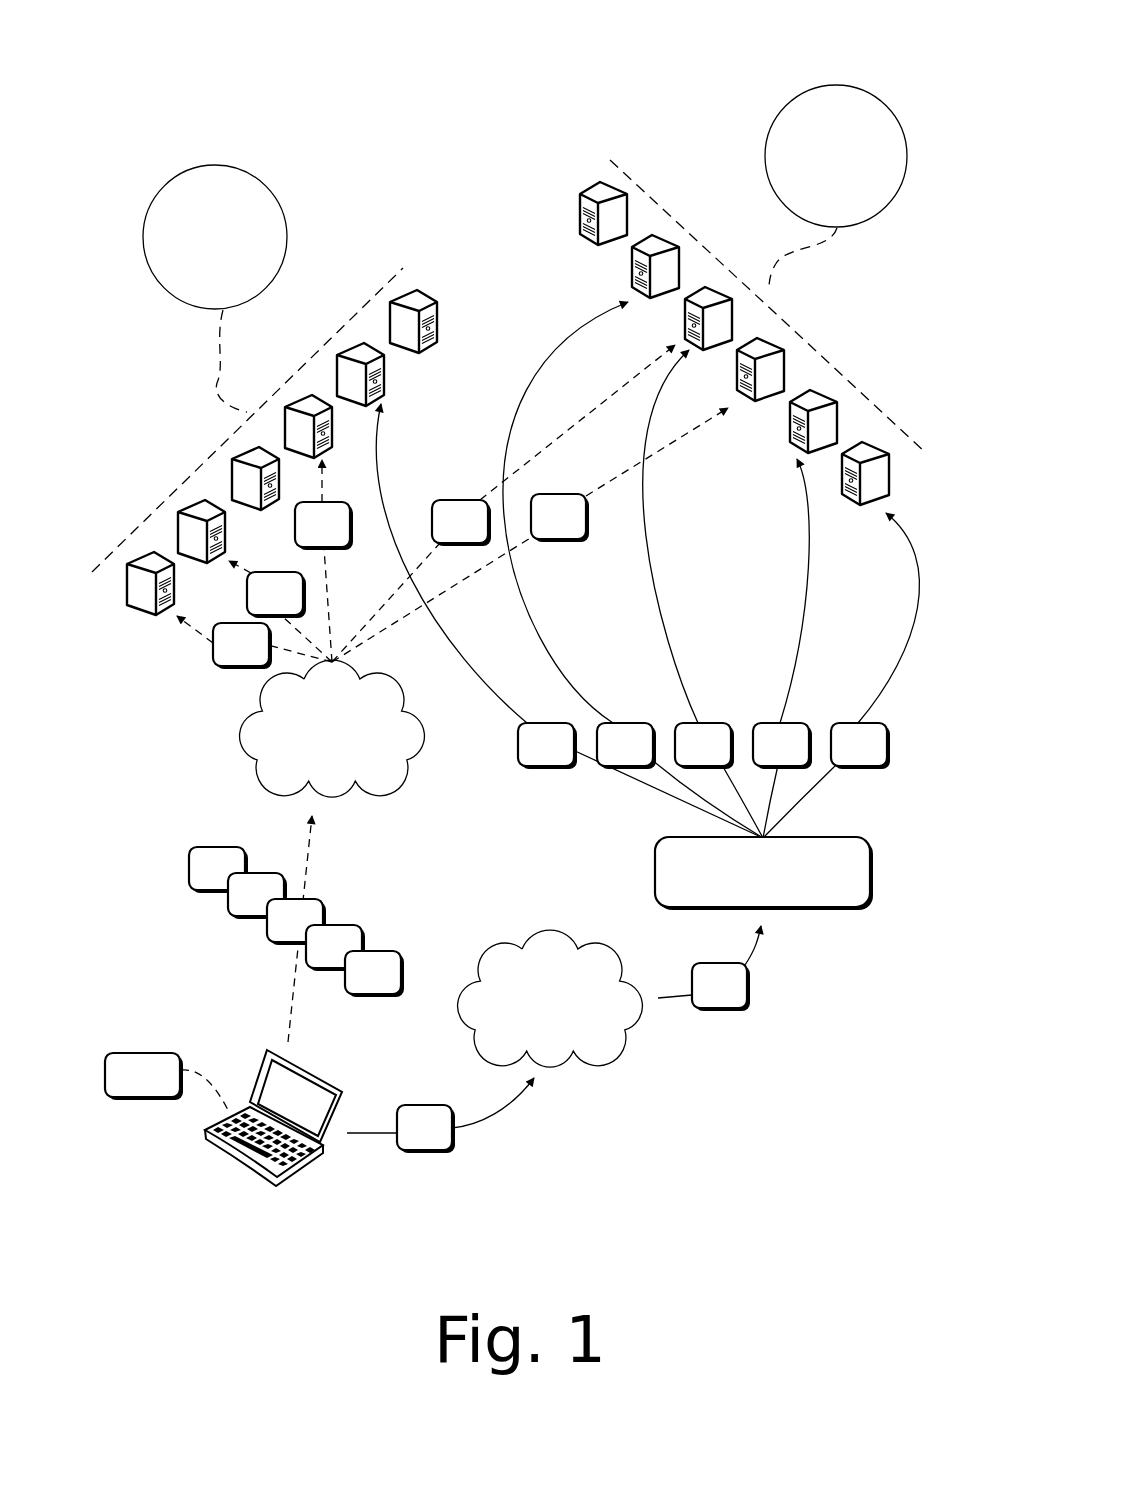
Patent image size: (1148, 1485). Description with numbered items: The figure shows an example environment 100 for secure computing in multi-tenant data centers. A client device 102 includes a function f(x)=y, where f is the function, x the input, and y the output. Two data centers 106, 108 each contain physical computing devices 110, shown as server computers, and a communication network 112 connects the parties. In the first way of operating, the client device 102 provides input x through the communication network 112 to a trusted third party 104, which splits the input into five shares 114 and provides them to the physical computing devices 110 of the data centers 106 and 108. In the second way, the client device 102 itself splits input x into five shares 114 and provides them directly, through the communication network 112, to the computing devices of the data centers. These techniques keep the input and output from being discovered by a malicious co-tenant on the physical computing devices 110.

The environment 100 is at (165, 56).
The client device 102 is at (223, 1129).
The trusted third party 104 is at (764, 873).
The data center 106 is at (215, 288).
The data center 108 is at (836, 187).
The physical computing devices 110 is at (388, 264).
The communication network 112 is at (441, 863).
The shares 114 is at (198, 699).